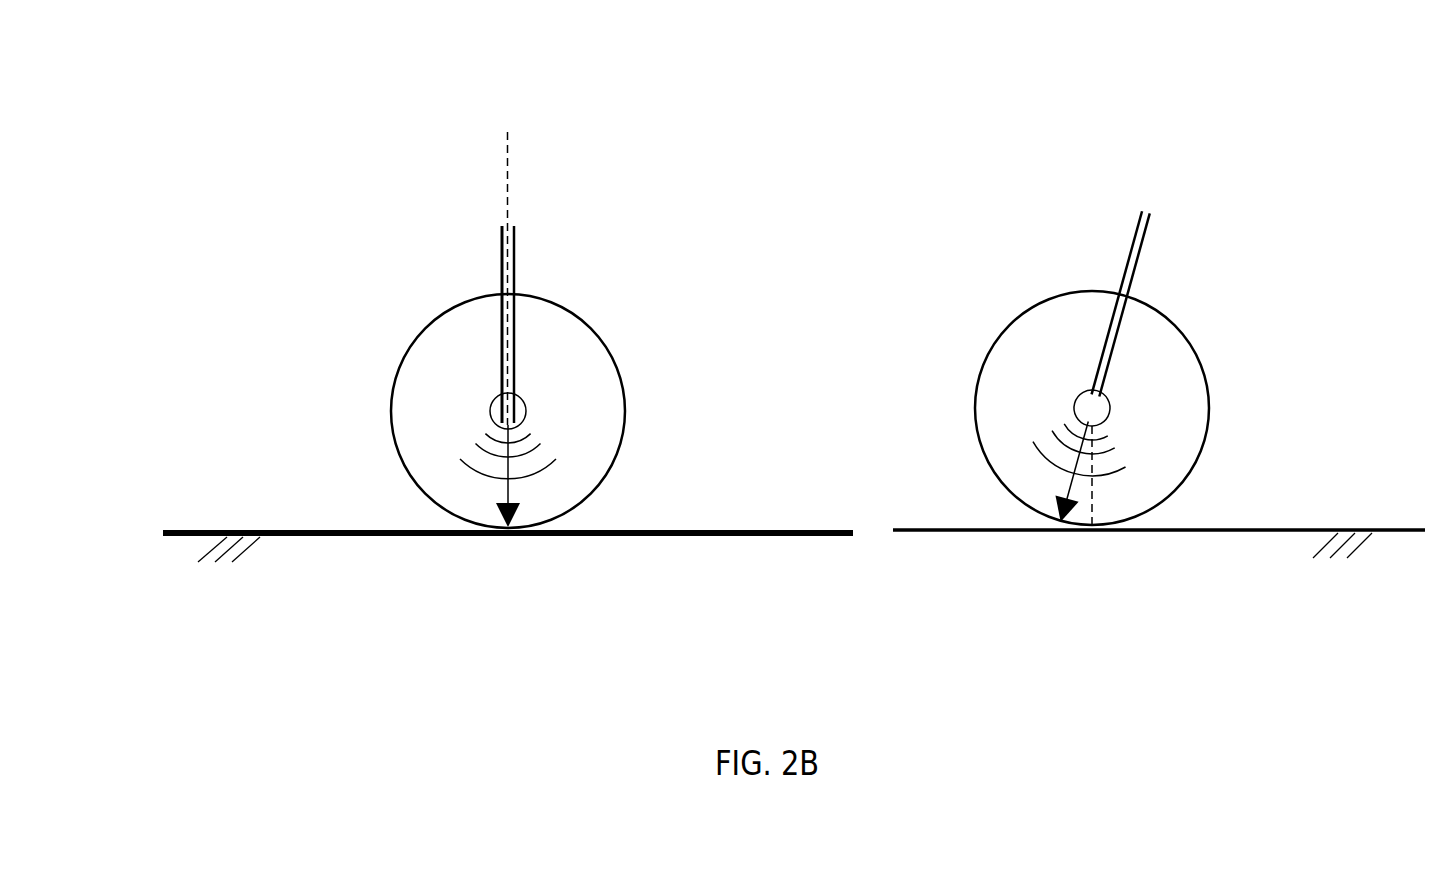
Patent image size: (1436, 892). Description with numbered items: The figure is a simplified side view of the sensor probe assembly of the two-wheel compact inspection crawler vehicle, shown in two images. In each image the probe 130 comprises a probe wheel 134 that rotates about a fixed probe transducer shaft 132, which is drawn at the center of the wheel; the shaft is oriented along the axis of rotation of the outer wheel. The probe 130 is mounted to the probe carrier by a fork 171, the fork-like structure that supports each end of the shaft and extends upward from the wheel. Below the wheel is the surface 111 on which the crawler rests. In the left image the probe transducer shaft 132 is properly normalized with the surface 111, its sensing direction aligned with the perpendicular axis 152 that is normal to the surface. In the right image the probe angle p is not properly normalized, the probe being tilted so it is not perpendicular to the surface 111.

The surface 111 is at (180, 505).
The probe 130 is at (738, 311).
The probe transducer shaft 132 is at (522, 400).
The probe wheel 134 is at (545, 313).
The perpendicular axis 152 is at (507, 182).
The fork 171 is at (501, 257).
The probe angle p is at (1098, 503).